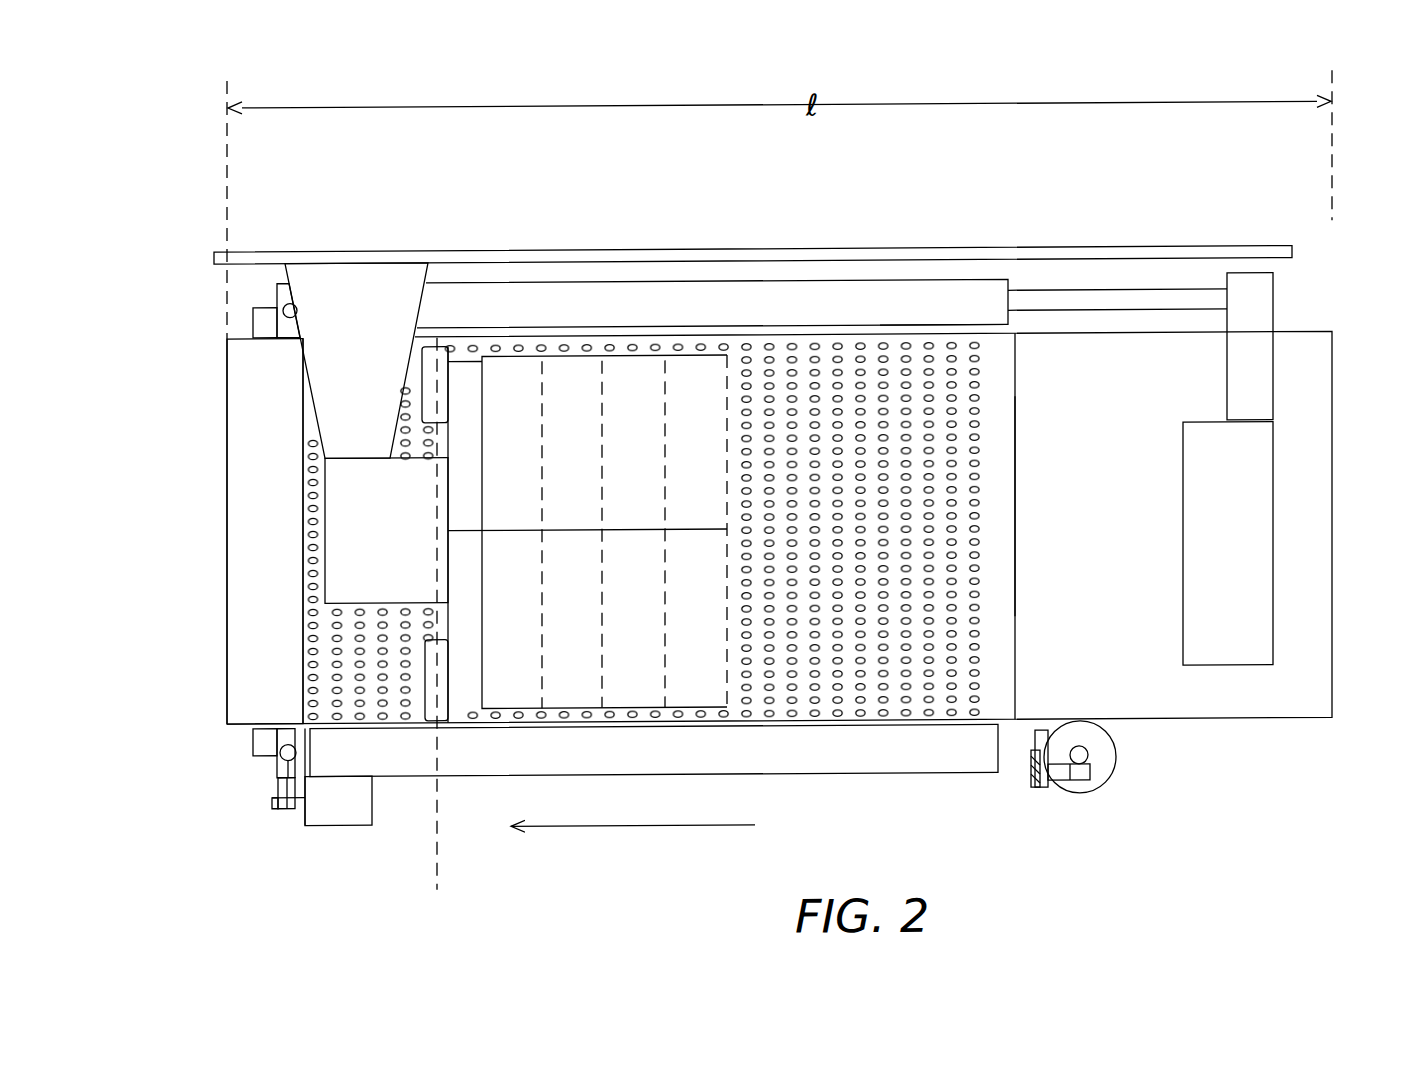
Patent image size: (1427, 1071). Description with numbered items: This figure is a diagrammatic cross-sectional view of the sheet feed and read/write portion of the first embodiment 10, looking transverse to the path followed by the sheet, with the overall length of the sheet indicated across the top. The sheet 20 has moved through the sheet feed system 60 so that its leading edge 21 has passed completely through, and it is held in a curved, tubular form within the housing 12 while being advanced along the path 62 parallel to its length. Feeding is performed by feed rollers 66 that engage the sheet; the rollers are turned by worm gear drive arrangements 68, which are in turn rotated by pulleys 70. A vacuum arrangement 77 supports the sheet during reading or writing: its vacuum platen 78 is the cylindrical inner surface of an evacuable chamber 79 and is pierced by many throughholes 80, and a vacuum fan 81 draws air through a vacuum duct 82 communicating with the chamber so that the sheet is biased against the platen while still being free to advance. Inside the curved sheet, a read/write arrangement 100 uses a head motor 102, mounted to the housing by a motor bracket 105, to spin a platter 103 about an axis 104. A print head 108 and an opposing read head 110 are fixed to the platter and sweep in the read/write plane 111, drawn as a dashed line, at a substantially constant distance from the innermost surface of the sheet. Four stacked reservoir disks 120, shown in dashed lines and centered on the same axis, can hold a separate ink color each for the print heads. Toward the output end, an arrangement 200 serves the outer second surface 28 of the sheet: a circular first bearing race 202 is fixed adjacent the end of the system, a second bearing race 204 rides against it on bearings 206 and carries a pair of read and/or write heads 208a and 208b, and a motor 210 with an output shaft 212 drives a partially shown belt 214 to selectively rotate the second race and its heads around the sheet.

The first embodiment 10 is at (1172, 88).
The housing 12 is at (1012, 254).
The sheet 20 is at (1270, 724).
The leading edge 21 is at (227, 698).
The second surface 28 is at (243, 579).
The sheet feed system 60 is at (811, 281).
The path 62 is at (652, 828).
The feed rollers 66 is at (1107, 788).
The worm gear drive arrangements 68 is at (1039, 797).
The pulleys 70 is at (1042, 735).
The vacuum arrangement 77 is at (1277, 313).
The vacuum platen 78 is at (990, 410).
The evacuable chamber 79 is at (905, 303).
The throughholes 80 is at (978, 481).
The vacuum fan 81 is at (1245, 572).
The vacuum duct 82 is at (1160, 294).
The read/write arrangement 100 is at (322, 500).
The head motor 102 is at (322, 545).
The platter 103 is at (462, 352).
The axis 104 is at (667, 531).
The motor bracket 105 is at (273, 271).
The print head 108 is at (441, 346).
The read head 110 is at (422, 723).
The read/write plane 111 is at (438, 818).
The stacked reservoir disks 120 is at (667, 356).
The arrangement 200 is at (336, 830).
The first bearing race 202 is at (300, 720).
The second bearing race 204 is at (278, 771).
The bearings 206 is at (277, 298).
The read and/or write head 208a is at (253, 745).
The read and/or write head 208b is at (253, 322).
The motor 210 is at (322, 827).
The output shaft 212 is at (272, 812).
The belt 214 is at (278, 787).